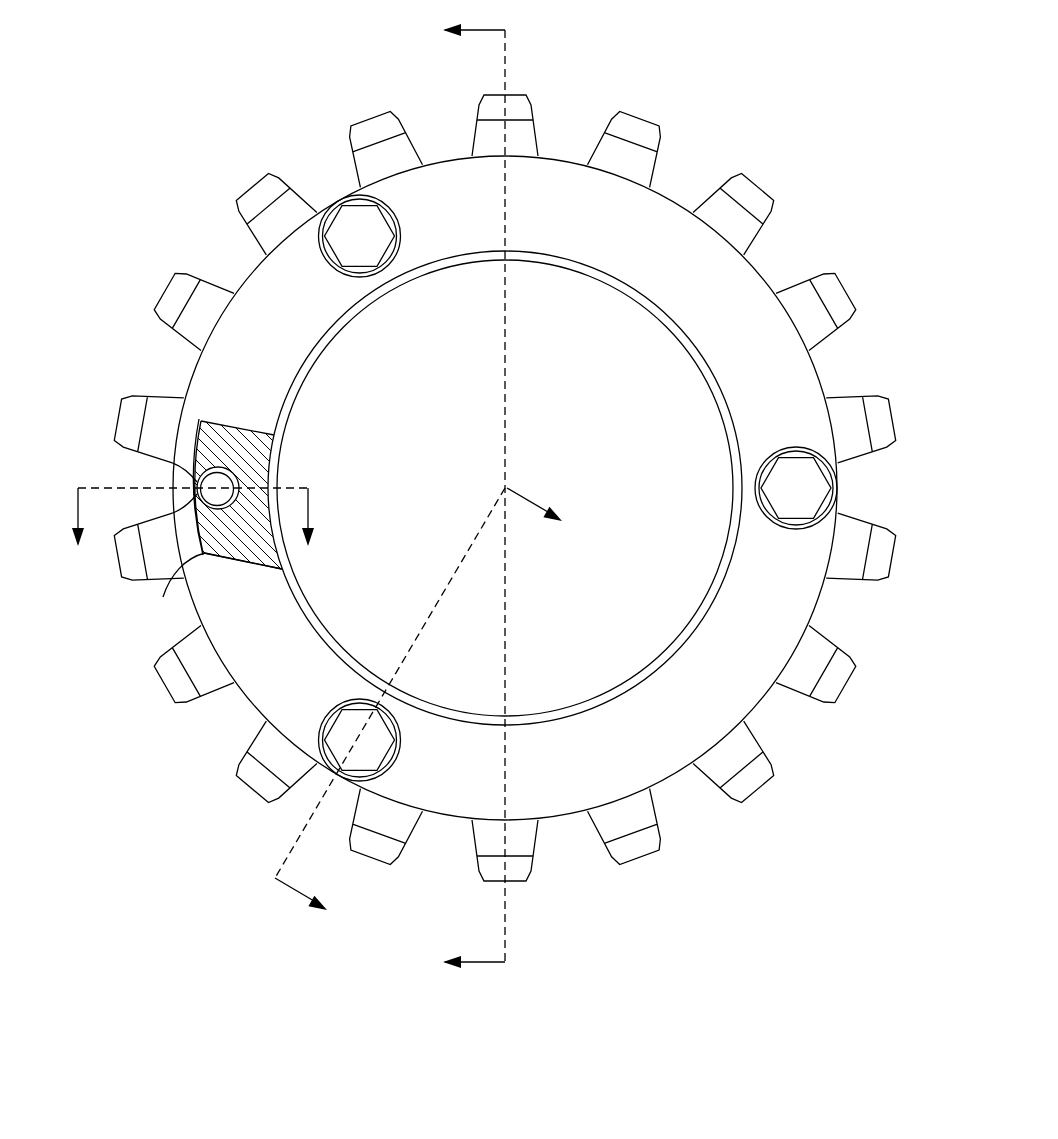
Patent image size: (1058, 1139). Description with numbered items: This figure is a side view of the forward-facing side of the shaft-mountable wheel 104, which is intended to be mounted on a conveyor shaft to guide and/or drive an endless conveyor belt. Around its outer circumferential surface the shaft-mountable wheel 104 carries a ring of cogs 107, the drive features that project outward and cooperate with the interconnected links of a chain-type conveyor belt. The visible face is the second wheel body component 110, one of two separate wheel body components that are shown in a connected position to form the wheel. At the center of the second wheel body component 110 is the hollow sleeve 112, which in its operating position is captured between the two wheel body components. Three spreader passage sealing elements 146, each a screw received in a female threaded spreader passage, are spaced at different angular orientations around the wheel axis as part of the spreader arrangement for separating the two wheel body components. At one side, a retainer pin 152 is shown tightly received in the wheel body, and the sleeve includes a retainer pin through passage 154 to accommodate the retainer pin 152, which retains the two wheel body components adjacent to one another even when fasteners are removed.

The shaft-mountable wheel 104 is at (764, 80).
The cogs 107 is at (850, 293).
The second wheel body component 110 is at (265, 282).
The hollow sleeve 112 is at (698, 362).
The spreader passage sealing element 146 is at (347, 220).
The retainer pin 152 is at (203, 483).
The retainer pin through passage 154 is at (163, 597).